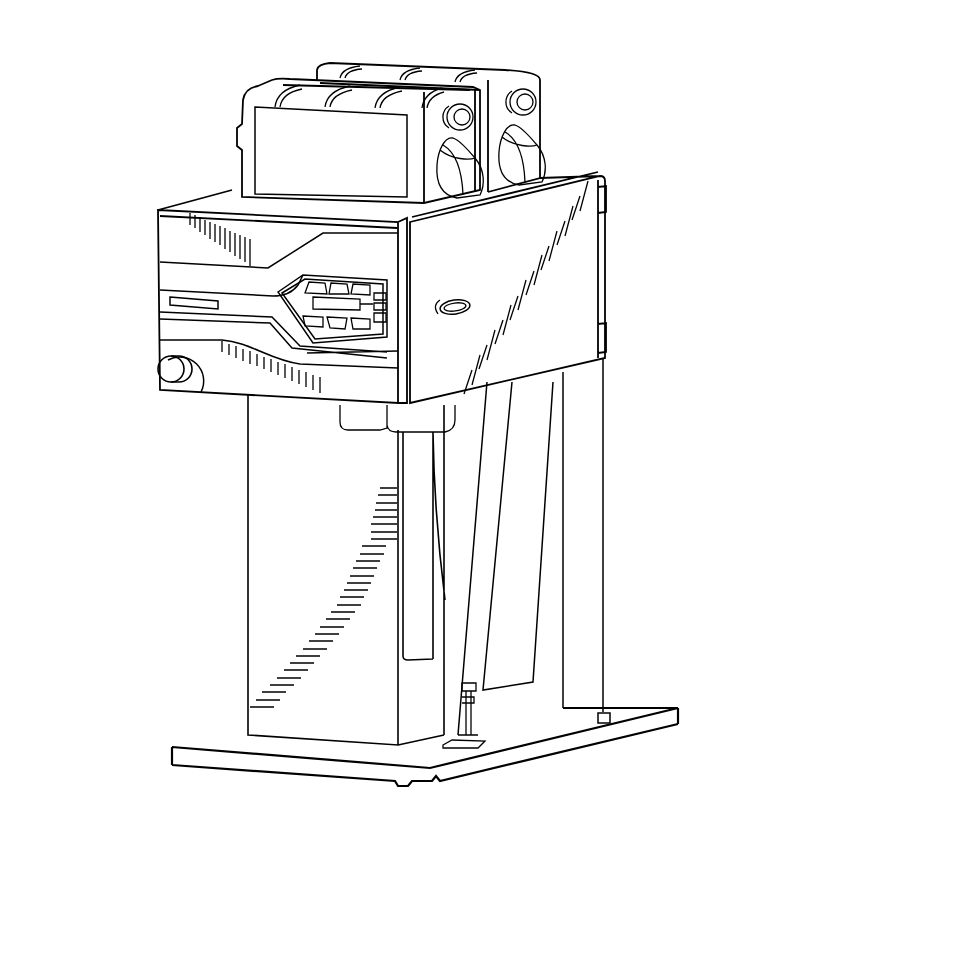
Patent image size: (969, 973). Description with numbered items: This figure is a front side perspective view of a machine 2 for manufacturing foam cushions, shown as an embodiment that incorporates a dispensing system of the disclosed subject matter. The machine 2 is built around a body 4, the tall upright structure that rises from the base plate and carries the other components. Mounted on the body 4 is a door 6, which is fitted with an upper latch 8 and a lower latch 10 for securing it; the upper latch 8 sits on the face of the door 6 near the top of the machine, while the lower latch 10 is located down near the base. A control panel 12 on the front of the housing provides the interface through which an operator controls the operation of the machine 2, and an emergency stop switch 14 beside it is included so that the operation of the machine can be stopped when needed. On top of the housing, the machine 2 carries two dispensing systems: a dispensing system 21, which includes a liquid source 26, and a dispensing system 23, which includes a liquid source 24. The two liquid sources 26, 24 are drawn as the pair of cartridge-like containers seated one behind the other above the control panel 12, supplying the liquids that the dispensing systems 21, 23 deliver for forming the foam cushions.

The machine 2 is at (113, 241).
The body 4 is at (293, 540).
The door 6 is at (567, 331).
The upper latch 8 is at (459, 305).
The lower latch 10 is at (470, 735).
The control panel 12 is at (338, 332).
The emergency stop switch 14 is at (167, 370).
The dispensing system 21 is at (240, 118).
The dispensing system 23 is at (538, 120).
The liquid source 24 is at (517, 82).
The liquid source 26 is at (257, 92).